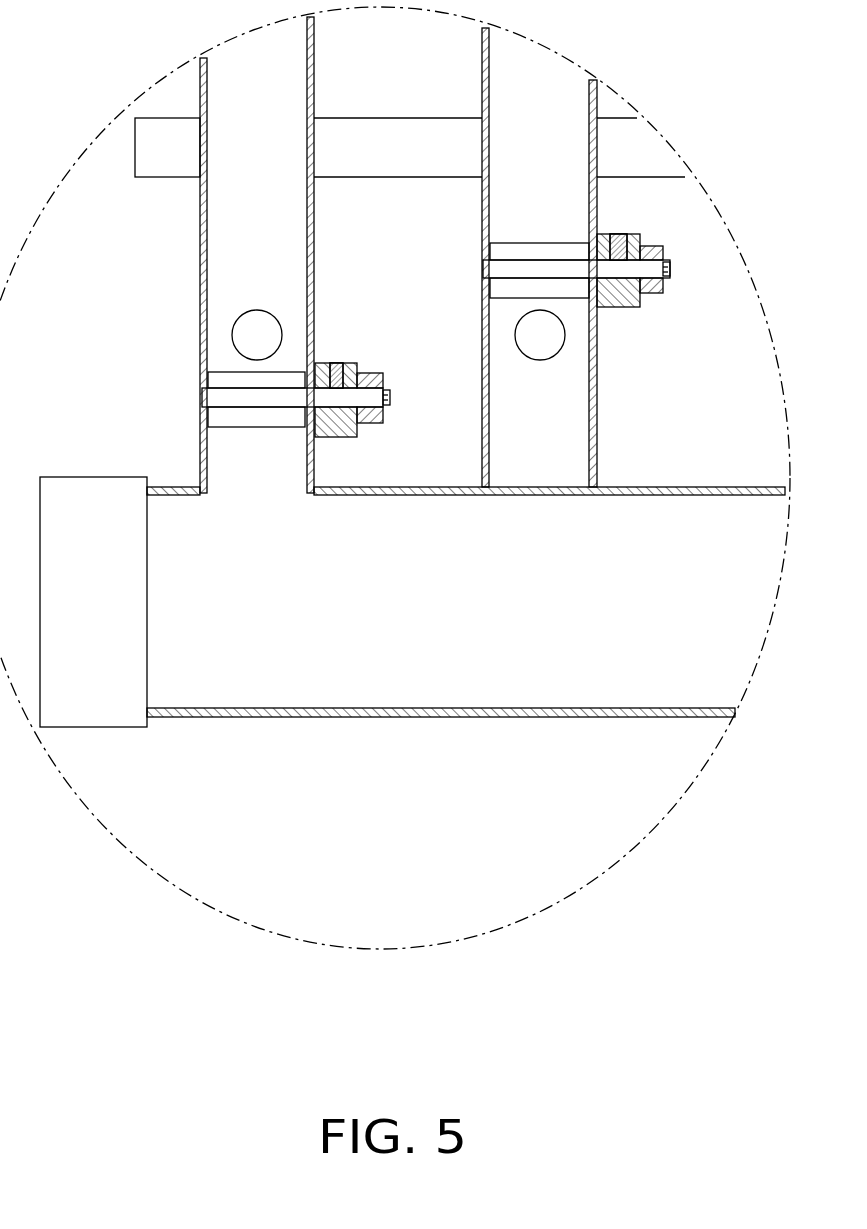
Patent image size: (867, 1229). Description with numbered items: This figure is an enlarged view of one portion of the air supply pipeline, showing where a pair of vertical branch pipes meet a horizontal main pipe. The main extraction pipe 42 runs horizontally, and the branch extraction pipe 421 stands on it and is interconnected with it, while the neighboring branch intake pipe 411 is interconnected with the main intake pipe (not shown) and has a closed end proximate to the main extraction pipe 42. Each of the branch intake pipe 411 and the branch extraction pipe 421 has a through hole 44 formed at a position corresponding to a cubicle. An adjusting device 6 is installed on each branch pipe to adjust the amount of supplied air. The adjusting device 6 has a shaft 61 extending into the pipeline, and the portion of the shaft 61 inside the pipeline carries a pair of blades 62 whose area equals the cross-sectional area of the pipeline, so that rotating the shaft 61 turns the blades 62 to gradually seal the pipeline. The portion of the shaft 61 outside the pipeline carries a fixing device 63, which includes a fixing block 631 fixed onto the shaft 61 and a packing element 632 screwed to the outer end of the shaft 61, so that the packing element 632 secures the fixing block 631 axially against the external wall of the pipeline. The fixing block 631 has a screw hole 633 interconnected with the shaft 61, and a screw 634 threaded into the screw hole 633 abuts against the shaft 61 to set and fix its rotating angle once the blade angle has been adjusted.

The branch extraction pipe 421 is at (248, 75).
The branch intake pipe 411 is at (548, 78).
The main extraction pipe 42 is at (367, 695).
The through hole 44 is at (243, 330).
The adjusting device 6 is at (672, 230).
The shaft 61 is at (205, 398).
The blades 62 is at (218, 372).
The fixing device 63 is at (369, 341).
The fixing block 631 is at (358, 363).
The packing element 632 is at (388, 380).
The screw hole 633 is at (310, 362).
The screw 634 is at (338, 365).